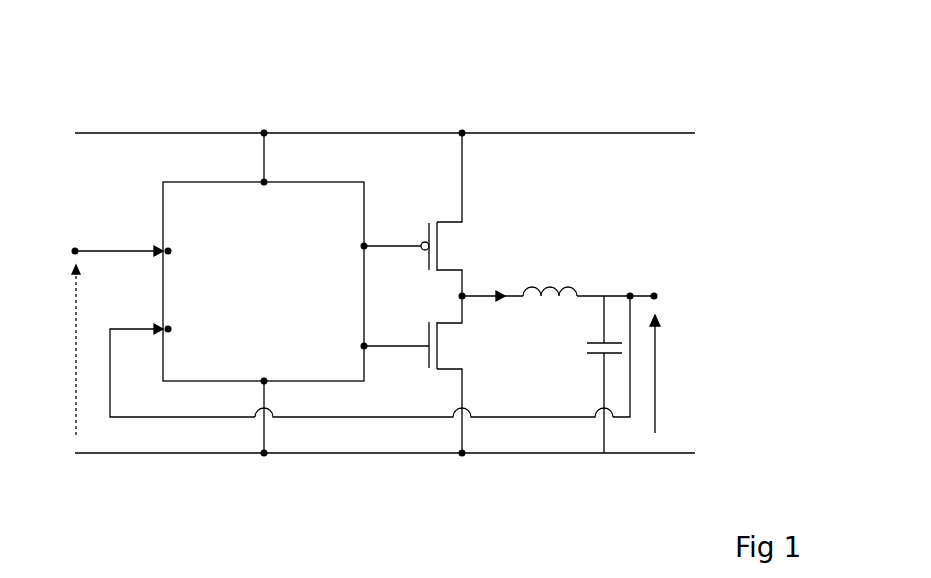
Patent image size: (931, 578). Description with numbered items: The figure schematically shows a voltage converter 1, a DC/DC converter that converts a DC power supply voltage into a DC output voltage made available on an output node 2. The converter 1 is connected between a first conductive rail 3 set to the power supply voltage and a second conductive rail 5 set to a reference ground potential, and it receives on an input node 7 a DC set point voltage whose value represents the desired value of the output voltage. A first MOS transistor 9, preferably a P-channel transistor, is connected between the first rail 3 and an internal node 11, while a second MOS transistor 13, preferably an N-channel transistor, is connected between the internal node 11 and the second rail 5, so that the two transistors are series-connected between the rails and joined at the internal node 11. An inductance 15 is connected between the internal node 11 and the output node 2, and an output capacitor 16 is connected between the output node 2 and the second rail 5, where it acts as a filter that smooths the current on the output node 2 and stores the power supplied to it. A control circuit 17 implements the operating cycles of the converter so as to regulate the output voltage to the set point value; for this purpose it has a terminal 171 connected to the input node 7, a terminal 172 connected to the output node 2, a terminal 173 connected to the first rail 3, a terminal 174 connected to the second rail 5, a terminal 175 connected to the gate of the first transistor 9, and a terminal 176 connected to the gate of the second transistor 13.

The voltage converter 1 is at (698, 66).
The output node 2 is at (657, 292).
The first conductive rail 3 is at (648, 133).
The second conductive rail 5 is at (661, 454).
The input node 7 is at (75, 249).
The first MOS transistor 9 is at (455, 246).
The internal node 11 is at (465, 292).
The second MOS transistor 13 is at (448, 352).
The inductance 15 is at (553, 287).
The output capacitor 16 is at (592, 357).
The control circuit 17 is at (263, 281).
The terminal 171 is at (171, 251).
The terminal 172 is at (171, 329).
The terminal 173 is at (264, 185).
The terminal 174 is at (264, 378).
The terminal 175 is at (360, 246).
The terminal 176 is at (360, 346).